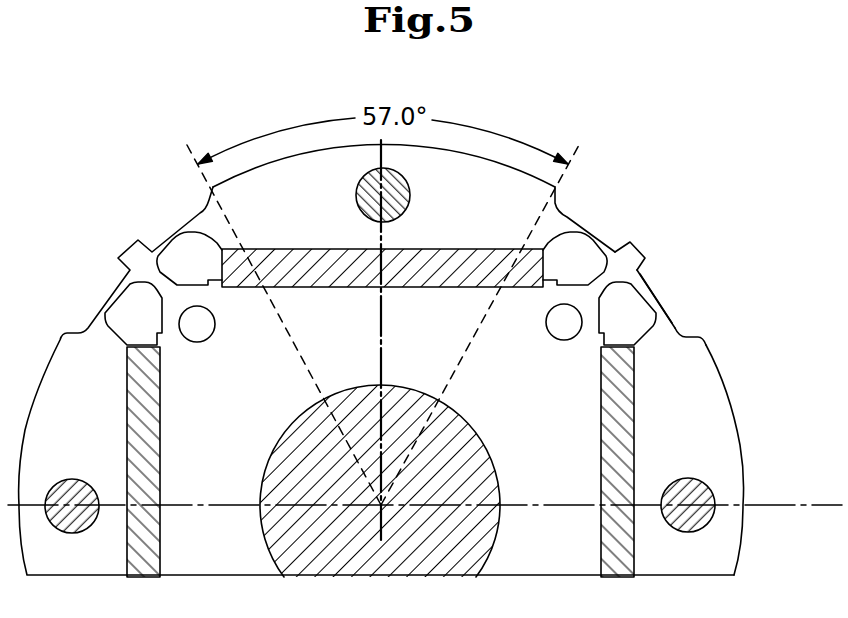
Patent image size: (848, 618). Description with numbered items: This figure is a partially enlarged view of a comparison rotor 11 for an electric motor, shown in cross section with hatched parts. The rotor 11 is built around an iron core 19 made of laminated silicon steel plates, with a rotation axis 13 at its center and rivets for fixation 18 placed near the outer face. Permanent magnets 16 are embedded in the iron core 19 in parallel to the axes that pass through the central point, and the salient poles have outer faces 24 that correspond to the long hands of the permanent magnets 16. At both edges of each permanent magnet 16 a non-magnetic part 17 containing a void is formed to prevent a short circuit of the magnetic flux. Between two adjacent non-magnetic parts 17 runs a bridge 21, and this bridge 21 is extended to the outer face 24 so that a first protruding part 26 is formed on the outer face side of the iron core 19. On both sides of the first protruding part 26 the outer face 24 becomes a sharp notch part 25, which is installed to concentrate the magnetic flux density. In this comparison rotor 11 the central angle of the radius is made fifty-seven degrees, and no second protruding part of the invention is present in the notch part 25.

The rotor 11 is at (728, 537).
The rotation axis 13 is at (473, 475).
The permanent magnet 16 is at (436, 257).
The non-magnetic part 17 is at (572, 253).
The rivet for fixation 18 is at (703, 497).
The iron core of the rotor 19 is at (727, 450).
The bridge 21 is at (654, 297).
The outer face 24 is at (728, 371).
The sharp notch part 25 is at (591, 242).
The first protruding part 26 is at (636, 244).